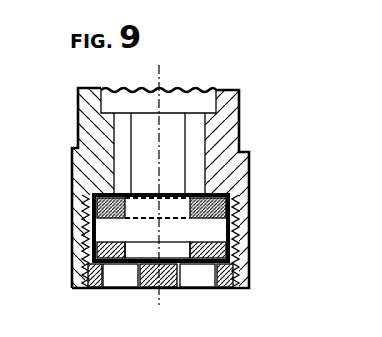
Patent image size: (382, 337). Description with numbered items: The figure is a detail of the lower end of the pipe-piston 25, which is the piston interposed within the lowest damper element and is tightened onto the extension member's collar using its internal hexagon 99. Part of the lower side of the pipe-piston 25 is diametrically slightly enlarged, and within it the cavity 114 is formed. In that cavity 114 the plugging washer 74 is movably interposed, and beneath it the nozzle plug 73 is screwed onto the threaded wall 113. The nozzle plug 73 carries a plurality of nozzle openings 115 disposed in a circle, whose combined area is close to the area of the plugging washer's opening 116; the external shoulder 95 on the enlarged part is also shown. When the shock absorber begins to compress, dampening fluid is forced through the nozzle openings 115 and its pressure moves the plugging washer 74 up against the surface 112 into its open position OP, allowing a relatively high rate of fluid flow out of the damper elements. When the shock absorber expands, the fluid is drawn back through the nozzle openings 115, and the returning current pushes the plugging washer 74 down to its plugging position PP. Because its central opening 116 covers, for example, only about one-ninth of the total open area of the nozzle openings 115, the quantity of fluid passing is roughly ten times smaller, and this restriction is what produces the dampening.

The pipe-piston 25 is at (77, 115).
The shoulder 95 is at (242, 151).
The internal hexagon 99 is at (124, 169).
The open position OP is at (86, 205).
The plugging position PP is at (86, 242).
The surface 112 is at (213, 192).
The threaded wall 113 is at (241, 220).
The cavity 114 is at (192, 229).
The nozzle plug 73 is at (98, 285).
The plugging washer 74 is at (120, 263).
The nozzle openings 115 is at (188, 280).
The plugging washer's opening 116 is at (175, 249).